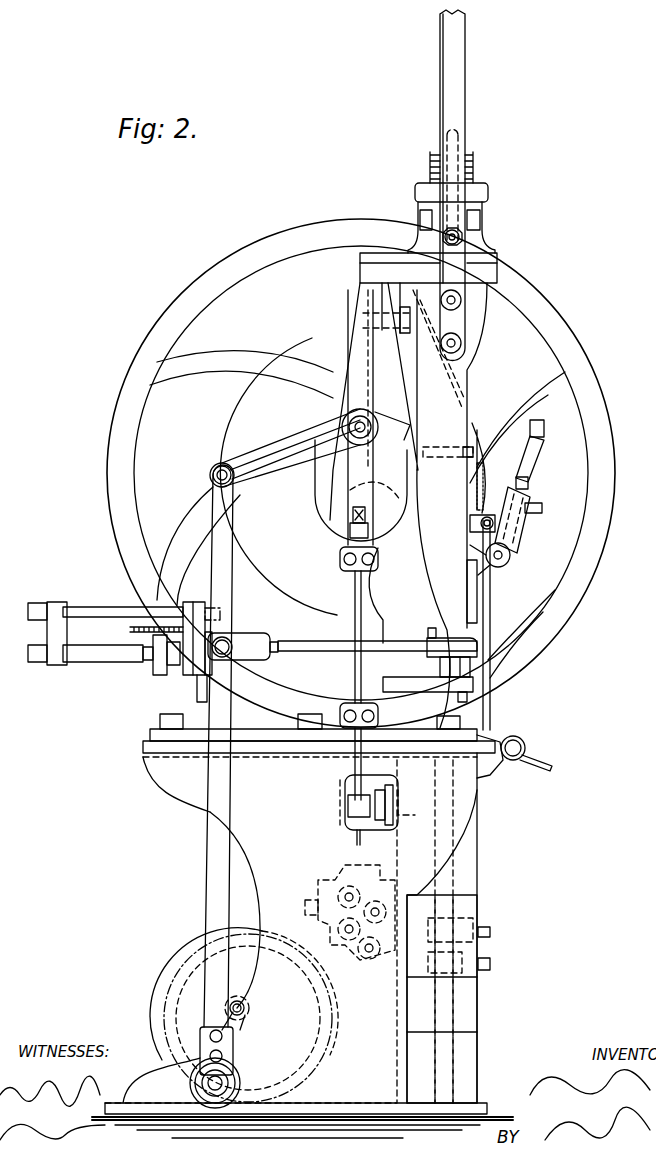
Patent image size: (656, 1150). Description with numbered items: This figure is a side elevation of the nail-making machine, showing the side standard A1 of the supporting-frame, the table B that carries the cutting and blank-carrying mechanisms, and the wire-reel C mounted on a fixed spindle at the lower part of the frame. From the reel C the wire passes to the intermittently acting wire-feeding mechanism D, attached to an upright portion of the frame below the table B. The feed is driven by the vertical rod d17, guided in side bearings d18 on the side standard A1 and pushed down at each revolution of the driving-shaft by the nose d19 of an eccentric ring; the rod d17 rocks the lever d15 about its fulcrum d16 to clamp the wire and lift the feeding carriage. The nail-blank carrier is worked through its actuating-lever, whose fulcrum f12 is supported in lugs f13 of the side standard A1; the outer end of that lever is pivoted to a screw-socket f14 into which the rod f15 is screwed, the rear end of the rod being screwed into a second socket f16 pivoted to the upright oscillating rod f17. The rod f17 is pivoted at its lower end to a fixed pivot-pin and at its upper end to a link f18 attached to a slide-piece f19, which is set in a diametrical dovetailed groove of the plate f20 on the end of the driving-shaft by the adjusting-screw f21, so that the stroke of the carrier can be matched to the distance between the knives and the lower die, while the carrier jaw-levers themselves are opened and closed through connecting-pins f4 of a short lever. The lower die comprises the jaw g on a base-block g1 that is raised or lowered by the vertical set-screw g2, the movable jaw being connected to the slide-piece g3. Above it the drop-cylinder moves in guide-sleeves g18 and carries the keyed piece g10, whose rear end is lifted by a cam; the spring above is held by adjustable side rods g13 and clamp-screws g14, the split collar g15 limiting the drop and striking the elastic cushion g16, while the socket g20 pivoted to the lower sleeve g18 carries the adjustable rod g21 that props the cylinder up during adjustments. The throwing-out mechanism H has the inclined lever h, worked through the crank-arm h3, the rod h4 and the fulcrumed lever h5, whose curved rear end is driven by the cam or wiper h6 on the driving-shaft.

The side rods g13 is at (469, 185).
The split screw-collar g15 is at (465, 202).
The elastic cushion g16 is at (452, 244).
The clamp-screws g14 is at (450, 321).
The side standard A1 is at (302, 579).
The link f18 is at (310, 448).
The slide-piece f19 is at (360, 441).
The plate f20 is at (365, 475).
The adjusting-screw f21 is at (346, 531).
The nose d19 is at (380, 514).
The cam or wiper h6 is at (333, 505).
The oscillating rod f17 is at (230, 770).
The second screw-socket f16 is at (243, 646).
The rod f15 is at (377, 655).
The screw-socket f14 is at (452, 657).
The fulcrum f12 is at (447, 628).
The lugs f13 is at (428, 663).
The side bearings d18 is at (348, 637).
The vertical rod d17 is at (359, 685).
The pivot d16 is at (384, 802).
The lever d15 is at (359, 841).
The wire-feeding mechanism D is at (350, 906).
The jaw g is at (442, 980).
The base-block g1 is at (459, 945).
The set-screw g2 is at (446, 1051).
The wire-reel C is at (244, 1015).
The connecting-pins f4 is at (203, 1083).
The table B is at (503, 1136).
The guide-sleeves g18 is at (472, 597).
The rod h4 is at (499, 625).
The fulcrumed lever h5 is at (442, 530).
The socket g20 is at (508, 531).
The adjustable rod g21 is at (538, 454).
The slide-piece g3 is at (540, 511).
The keyed piece g10 is at (499, 460).
The throwing-out mechanism H is at (512, 739).
The throwing-out lever h is at (536, 772).
The crank-arm h3 is at (494, 761).